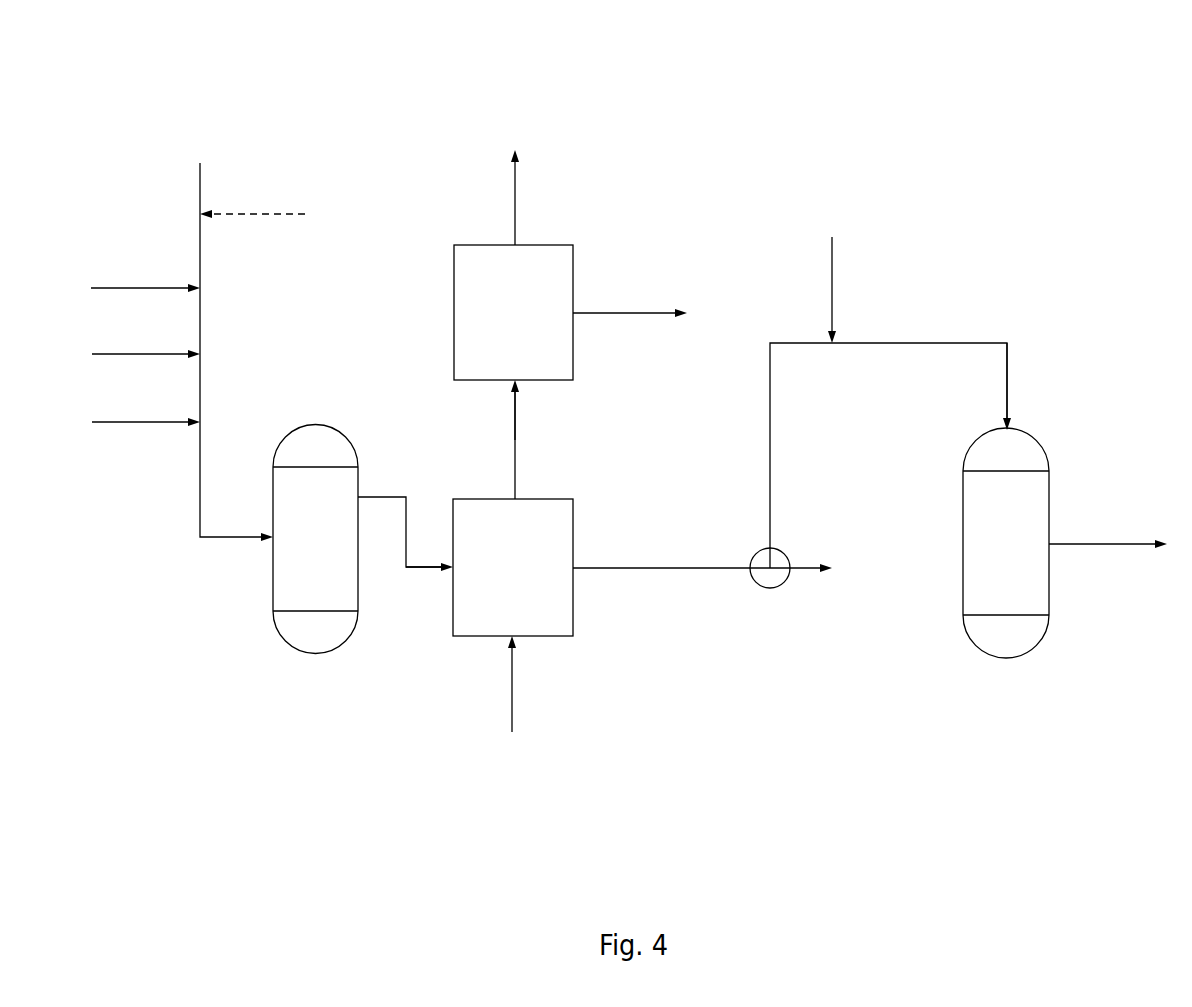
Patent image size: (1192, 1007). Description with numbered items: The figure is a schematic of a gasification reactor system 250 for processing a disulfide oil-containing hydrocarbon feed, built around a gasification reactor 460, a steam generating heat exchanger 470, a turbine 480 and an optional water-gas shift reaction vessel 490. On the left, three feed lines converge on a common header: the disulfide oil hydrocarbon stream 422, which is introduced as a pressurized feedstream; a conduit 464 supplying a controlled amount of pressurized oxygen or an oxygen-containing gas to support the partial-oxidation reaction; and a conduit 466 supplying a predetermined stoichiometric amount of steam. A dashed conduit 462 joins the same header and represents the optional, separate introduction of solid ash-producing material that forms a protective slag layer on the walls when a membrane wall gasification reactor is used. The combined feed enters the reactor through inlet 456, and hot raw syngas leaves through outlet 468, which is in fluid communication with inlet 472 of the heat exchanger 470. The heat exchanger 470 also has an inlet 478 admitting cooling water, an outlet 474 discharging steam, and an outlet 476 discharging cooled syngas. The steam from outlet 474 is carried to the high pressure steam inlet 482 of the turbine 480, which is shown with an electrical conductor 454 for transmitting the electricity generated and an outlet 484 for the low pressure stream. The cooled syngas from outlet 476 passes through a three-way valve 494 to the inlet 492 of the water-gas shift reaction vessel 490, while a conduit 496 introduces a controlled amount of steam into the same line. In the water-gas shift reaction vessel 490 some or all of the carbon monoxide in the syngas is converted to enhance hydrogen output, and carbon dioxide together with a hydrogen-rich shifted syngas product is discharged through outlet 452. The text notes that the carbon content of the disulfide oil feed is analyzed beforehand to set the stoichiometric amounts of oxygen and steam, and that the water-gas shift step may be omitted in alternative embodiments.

The hydroprocessing system (250/350) 250 is at (131, 76).
The disulfide oil hydrocarbon stream 422 is at (143, 286).
The conduit 464 is at (143, 352).
The conduit 466 is at (143, 420).
The conduit 462 is at (278, 212).
The inlet 456 is at (198, 527).
The gasification reactor 460 is at (330, 554).
The outlet 468 is at (391, 493).
The inlet 472 is at (434, 562).
The heat exchanger 470 is at (529, 582).
The outlet 474 is at (513, 486).
The high pressure steam inlet 482 is at (513, 426).
The inlet 478 is at (510, 692).
The turbine 480 is at (530, 331).
The electrical conductor 454 is at (513, 204).
The outlet 484 is at (621, 309).
The outlet 476 is at (611, 566).
The three-way valve 494 is at (754, 554).
The conduit 496 is at (829, 288).
The inlet 492 is at (1004, 400).
The water-gas shift reaction vessel 490 is at (1022, 557).
The outlet 452 is at (1096, 541).